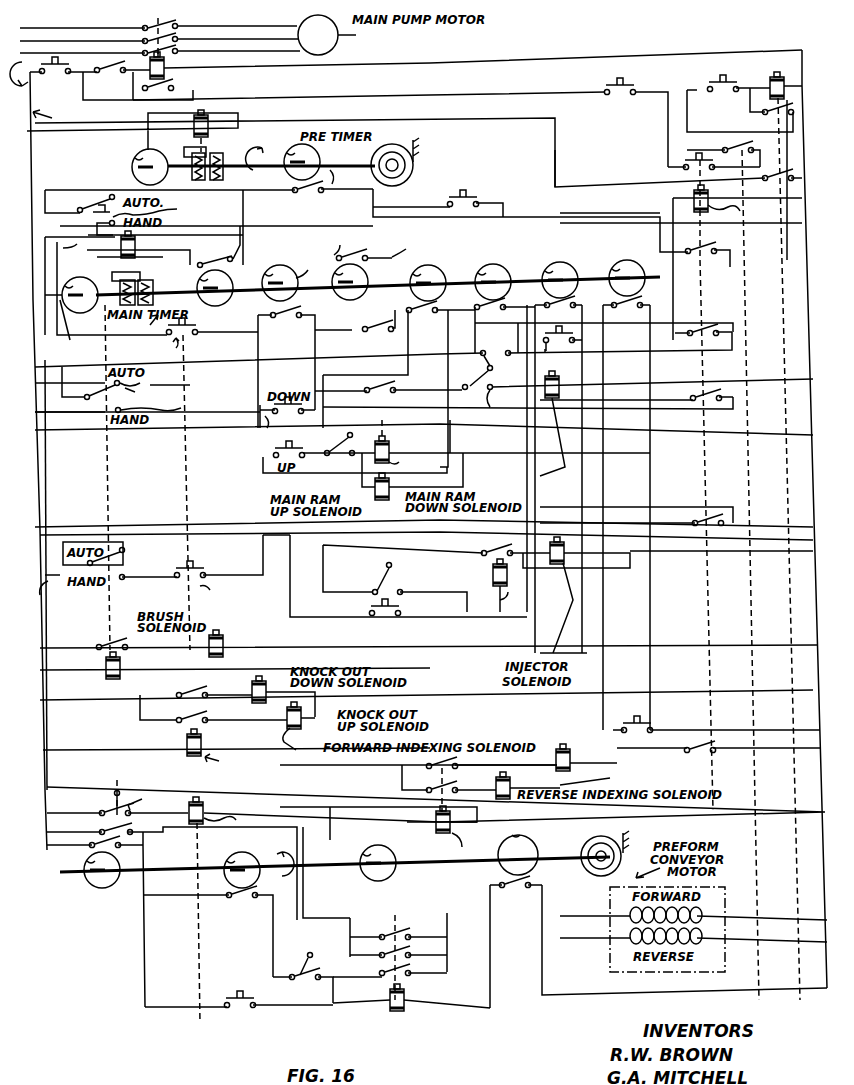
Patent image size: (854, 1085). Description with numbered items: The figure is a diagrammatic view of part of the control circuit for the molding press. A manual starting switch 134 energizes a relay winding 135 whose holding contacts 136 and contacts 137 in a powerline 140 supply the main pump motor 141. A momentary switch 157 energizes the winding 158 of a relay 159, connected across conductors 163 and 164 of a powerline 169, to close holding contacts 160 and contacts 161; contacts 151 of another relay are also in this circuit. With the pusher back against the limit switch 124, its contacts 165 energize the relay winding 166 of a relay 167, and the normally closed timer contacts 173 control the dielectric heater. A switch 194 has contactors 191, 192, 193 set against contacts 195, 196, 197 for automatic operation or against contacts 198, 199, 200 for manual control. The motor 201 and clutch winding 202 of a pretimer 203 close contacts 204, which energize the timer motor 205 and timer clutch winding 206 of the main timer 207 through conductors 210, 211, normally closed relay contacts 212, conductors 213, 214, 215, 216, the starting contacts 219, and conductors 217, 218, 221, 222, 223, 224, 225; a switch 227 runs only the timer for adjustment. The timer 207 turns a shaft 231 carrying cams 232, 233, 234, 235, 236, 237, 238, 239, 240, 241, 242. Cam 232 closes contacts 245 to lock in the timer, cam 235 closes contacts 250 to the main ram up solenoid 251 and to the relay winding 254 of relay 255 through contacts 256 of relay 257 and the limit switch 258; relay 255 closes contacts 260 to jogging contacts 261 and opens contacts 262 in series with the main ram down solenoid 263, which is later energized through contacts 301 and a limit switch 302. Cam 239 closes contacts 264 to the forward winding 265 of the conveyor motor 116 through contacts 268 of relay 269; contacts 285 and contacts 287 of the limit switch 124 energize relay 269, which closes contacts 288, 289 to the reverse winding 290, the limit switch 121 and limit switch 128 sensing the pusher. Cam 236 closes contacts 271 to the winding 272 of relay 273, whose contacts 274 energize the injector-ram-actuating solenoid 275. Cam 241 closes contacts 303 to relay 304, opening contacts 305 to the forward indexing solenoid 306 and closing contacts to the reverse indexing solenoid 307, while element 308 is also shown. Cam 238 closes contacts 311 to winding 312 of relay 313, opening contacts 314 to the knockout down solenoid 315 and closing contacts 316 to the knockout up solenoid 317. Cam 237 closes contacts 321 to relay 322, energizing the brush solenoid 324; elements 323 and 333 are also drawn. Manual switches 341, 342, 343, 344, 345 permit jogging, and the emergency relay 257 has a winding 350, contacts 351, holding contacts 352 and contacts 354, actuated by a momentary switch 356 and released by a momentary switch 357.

The preform conveyor motor 116 is at (597, 964).
The limit switch 121 is at (300, 955).
The limit switch 124 is at (155, 795).
The limit switch 128 is at (375, 583).
The manual starting switch 134 is at (106, 76).
The relay winding 135 is at (164, 78).
The holding contacts 136 is at (132, 98).
The contacts 137 is at (172, 58).
The powerline 140 is at (40, 79).
The main pump motor 141 is at (345, 40).
The contacts 151 is at (732, 144).
The momentary switch 157 is at (712, 85).
The winding 158 is at (794, 57).
The relay 159 is at (770, 72).
The holding contacts 160 is at (754, 124).
The contacts 161 is at (784, 196).
The conductor 163 is at (806, 300).
The conductor 164 is at (38, 158).
The contacts 165 is at (105, 804).
The relay winding 166 is at (240, 818).
The relay 167 is at (210, 803).
The powerline 169 is at (54, 461).
The timer contacts 173 is at (516, 890).
The contactor 191 is at (80, 224).
The contactor 192 is at (84, 408).
The contactor 193 is at (63, 590).
The switch 194 is at (179, 386).
The contact 195 is at (92, 202).
The contact 196 is at (111, 381).
The contact 197 is at (125, 550).
The contact 198 is at (163, 206).
The contact 199 is at (134, 413).
The contact 200 is at (125, 580).
The motor 201 is at (130, 174).
The clutch winding 202 is at (180, 131).
The pretimer 203 is at (216, 152).
The contacts 204 is at (308, 196).
The timer motor 205 is at (79, 326).
The timer clutch winding 206 is at (112, 288).
The main timer 207 is at (156, 335).
The conductor 210 is at (237, 352).
The conductor 211 is at (730, 276).
The relay contacts 212 is at (702, 230).
The conductor 213 is at (530, 197).
The conductor 214 is at (530, 220).
The conductor 215 is at (244, 214).
The conductor 216 is at (267, 169).
The conductor 217 is at (349, 173).
The conductor 218 is at (414, 242).
The starting contacts 219 is at (351, 243).
The conductor 221 is at (336, 255).
The conductor 222 is at (199, 265).
The conductor 223 is at (140, 245).
The conductor 224 is at (78, 250).
The conductor 225 is at (113, 263).
The switch 227 is at (470, 190).
The shaft 231 is at (270, 260).
The cam 232 is at (240, 328).
The cam 233 is at (314, 271).
The cam 234 is at (368, 272).
The cam 235 is at (432, 266).
The cam 236 is at (496, 264).
The cam 237 is at (562, 262).
The cam 238 is at (630, 260).
The cam 239 is at (105, 888).
The cam 240 is at (250, 852).
The cam 241 is at (355, 880).
The cam 242 is at (530, 843).
The contacts 245 is at (219, 247).
The contacts 250 is at (440, 384).
The main ram up solenoid 251 is at (392, 487).
The relay winding 254 is at (412, 461).
The relay 255 is at (392, 450).
The contacts 256 is at (696, 522).
The relay 257 is at (680, 193).
The limit switch 258 is at (330, 456).
The contacts 260 is at (372, 326).
The jogging switch contacts 261 is at (160, 351).
The contacts 262 is at (405, 381).
The main ram down solenoid 263 is at (566, 362).
The contacts 264 is at (72, 853).
The forward winding 265 is at (602, 919).
The contacts 268 is at (390, 925).
The relay 269 is at (382, 997).
The contacts 271 is at (603, 327).
The winding 272 is at (492, 574).
The relay 273 is at (491, 595).
The contacts 274 is at (483, 552).
The injector-ram-actuating solenoid 275 is at (564, 532).
The contacts 285 is at (245, 905).
The contacts 287 is at (154, 846).
The contacts 288 is at (420, 950).
The contacts 289 is at (420, 968).
The reverse winding 290 is at (607, 942).
The contacts 301 is at (286, 367).
The limit switch 302 is at (528, 406).
The contacts 303 is at (412, 830).
The relay 304 is at (461, 845).
The contacts 305 is at (404, 776).
The forward indexing solenoid 306 is at (572, 752).
The reverse indexing solenoid 307 is at (414, 793).
The reverse indexing solenoid 308 is at (482, 786).
The contacts 311 is at (627, 513).
The winding 312 is at (202, 740).
The relay 313 is at (234, 758).
The contacts 314 is at (196, 693).
The knockout down solenoid 315 is at (252, 688).
The contacts 316 is at (208, 716).
The knockout up solenoid 317 is at (306, 742).
The contacts 321 is at (558, 474).
The relay 322 is at (99, 682).
The switch 323 is at (106, 632).
The solenoid 324 is at (224, 636).
The push button 333 is at (670, 167).
The switch 341 is at (266, 421).
The switch 342 is at (263, 465).
The switch 343 is at (224, 585).
The switch 344 is at (645, 718).
The switch 345 is at (228, 995).
The winding 350 is at (745, 208).
The contacts 351 is at (693, 735).
The holding contacts 352 is at (722, 322).
The contacts 354 is at (710, 388).
The momentary switch 356 is at (532, 334).
The momentary switch 357 is at (495, 368).